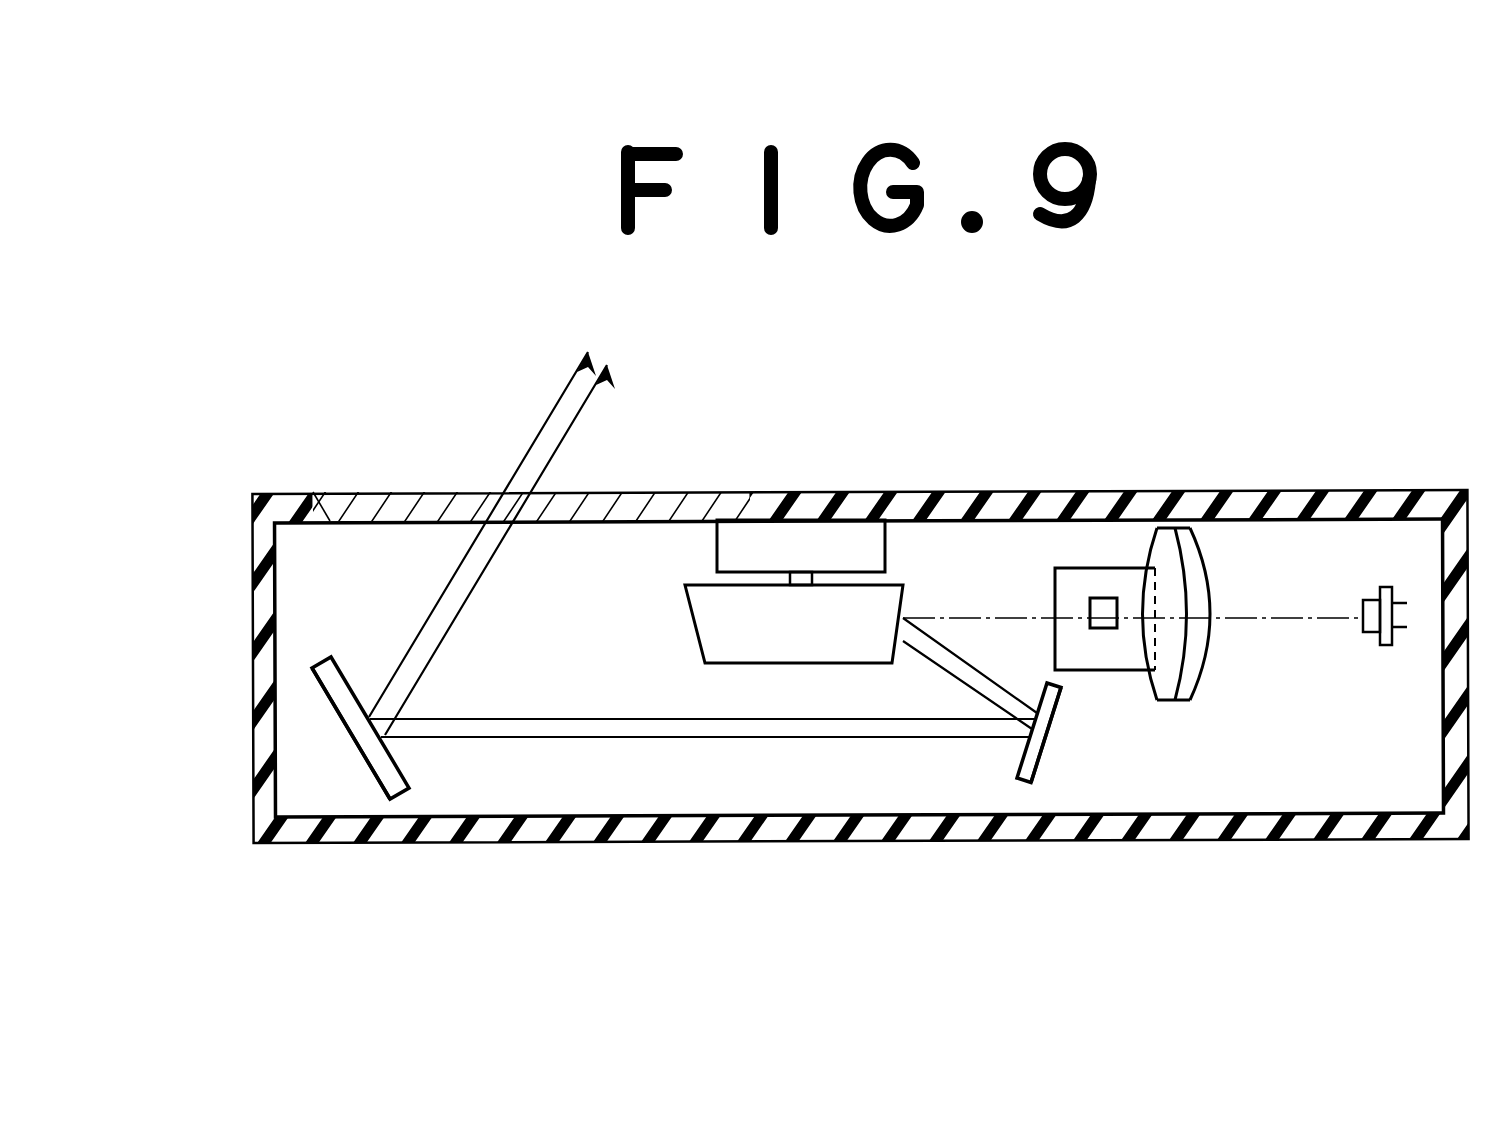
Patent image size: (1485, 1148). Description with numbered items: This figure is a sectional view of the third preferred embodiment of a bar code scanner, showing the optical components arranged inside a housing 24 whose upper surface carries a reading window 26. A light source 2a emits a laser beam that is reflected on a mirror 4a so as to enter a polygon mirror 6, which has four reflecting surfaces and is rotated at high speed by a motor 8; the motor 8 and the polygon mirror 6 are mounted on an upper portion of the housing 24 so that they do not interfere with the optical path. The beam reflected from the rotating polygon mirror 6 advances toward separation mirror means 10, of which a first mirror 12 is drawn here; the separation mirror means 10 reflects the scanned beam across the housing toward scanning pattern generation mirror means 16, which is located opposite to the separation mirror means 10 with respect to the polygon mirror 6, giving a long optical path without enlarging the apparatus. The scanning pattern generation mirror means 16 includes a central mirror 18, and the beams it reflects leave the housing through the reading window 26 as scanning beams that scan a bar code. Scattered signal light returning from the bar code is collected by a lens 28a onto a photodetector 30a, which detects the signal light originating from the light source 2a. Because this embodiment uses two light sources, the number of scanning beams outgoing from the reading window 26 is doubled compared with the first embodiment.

The light source 2a is at (1055, 572).
The mirror 4a is at (1110, 628).
The polygon mirror 6 is at (690, 624).
The motor 8 is at (717, 556).
The separation mirror means 10 is at (1042, 766).
The first mirror 12 is at (1050, 752).
The scanning pattern generation mirror means 16 is at (346, 733).
The central mirror 18 is at (372, 772).
The housing 24 is at (1078, 492).
The reading window 26 is at (367, 492).
The lens 28a is at (1197, 695).
The photodetector 30a is at (1370, 635).